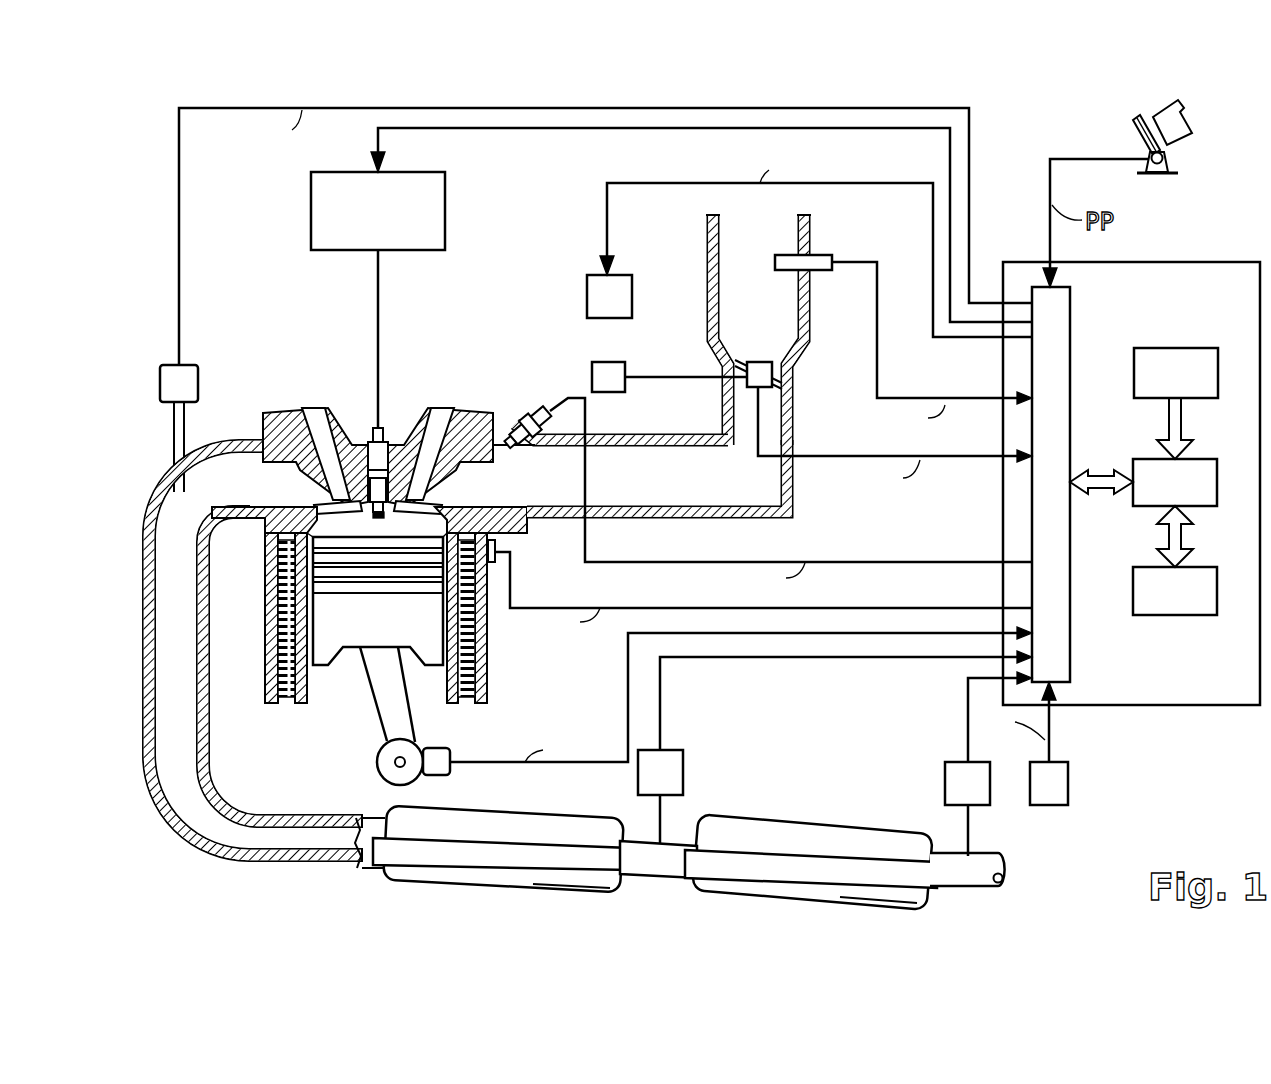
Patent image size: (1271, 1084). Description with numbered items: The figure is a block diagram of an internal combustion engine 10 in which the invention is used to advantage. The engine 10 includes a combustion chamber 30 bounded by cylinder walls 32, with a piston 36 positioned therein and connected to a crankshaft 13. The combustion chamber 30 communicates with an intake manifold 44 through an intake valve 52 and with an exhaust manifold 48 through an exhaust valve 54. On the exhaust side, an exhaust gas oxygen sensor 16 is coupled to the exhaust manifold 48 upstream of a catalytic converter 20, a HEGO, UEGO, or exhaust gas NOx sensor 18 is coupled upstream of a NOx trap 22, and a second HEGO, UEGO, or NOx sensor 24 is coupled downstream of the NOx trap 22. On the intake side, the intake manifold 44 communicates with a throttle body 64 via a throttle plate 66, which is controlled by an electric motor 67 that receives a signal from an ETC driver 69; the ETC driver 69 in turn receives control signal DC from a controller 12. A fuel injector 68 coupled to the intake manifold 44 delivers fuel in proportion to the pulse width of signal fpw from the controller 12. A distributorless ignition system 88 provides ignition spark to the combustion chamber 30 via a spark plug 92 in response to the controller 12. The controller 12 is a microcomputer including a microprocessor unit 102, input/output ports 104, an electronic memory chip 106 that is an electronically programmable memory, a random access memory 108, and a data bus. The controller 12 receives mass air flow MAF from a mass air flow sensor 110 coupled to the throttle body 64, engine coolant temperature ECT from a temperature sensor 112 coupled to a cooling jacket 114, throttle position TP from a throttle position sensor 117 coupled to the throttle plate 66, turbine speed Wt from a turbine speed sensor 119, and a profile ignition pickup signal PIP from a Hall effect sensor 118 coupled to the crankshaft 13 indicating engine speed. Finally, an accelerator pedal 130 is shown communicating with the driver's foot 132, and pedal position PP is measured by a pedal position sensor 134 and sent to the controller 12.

The internal combustion engine 10 is at (296, 768).
The controller 12 is at (1222, 262).
The crankshaft 13 is at (405, 782).
The exhaust gas oxygen sensor 16 is at (198, 365).
The exhaust gas NOx sensor 18 is at (835, 747).
The catalytic converter 20 is at (570, 812).
The NOx trap 22 is at (890, 818).
The second HEGO, UEGO, or NOx sensor 24 is at (988, 764).
The combustion chamber 30 is at (363, 528).
The cylinder walls 32 is at (313, 693).
The piston 36 is at (380, 637).
The intake manifold 44 is at (640, 468).
The exhaust manifold 48 is at (178, 512).
The intake valve 52 is at (436, 497).
The exhaust valve 54 is at (320, 497).
The throttle body 64 is at (795, 235).
The throttle plate 66 is at (737, 362).
The electric motor 67 is at (625, 362).
The fuel injector 68 is at (522, 405).
The ETC driver 69 is at (625, 275).
The distributorless ignition system 88 is at (410, 172).
The spark plug 92 is at (383, 430).
The microprocessor unit 102 is at (1197, 460).
The input/output ports 104 is at (1072, 332).
The electronic memory chip 106 is at (1200, 349).
The random access memory 108 is at (1197, 568).
The mass air flow sensor 110 is at (822, 255).
The temperature sensor 112 is at (497, 546).
The cooling jacket 114 is at (487, 682).
The throttle position sensor 117 is at (765, 362).
The Hall effect sensor 118 is at (440, 748).
The turbine speed sensor 119 is at (1060, 762).
The accelerator pedal 130 is at (1132, 132).
The driver's foot 132 is at (1182, 122).
The pedal position sensor 134 is at (1170, 165).